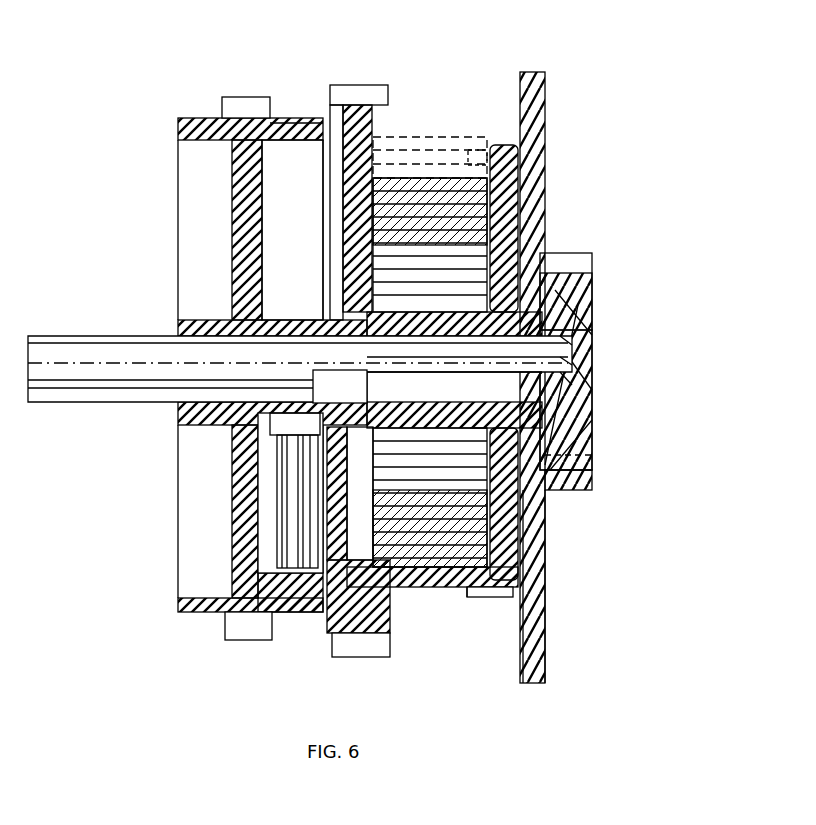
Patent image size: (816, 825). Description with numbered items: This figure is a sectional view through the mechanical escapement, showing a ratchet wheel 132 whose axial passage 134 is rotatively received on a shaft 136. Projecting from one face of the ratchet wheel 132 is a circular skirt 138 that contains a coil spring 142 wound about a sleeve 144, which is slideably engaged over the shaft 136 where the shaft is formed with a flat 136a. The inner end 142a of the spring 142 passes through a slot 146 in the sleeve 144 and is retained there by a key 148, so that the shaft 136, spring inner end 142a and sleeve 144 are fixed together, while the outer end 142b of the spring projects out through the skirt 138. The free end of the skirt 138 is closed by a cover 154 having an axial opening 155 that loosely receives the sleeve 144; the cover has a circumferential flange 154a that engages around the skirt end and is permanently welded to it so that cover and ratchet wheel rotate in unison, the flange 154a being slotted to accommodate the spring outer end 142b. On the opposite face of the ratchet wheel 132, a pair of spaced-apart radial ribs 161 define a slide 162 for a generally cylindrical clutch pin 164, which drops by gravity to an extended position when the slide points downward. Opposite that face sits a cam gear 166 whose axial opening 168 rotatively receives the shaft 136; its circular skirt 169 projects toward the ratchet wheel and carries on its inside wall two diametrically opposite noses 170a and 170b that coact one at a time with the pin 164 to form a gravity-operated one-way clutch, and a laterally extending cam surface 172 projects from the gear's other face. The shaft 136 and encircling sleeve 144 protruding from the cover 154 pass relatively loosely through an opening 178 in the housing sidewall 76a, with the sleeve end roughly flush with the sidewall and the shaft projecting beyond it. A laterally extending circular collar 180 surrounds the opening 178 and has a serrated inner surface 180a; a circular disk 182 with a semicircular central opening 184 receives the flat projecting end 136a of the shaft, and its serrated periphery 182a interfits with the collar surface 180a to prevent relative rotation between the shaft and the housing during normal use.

The housing sidewall 76a is at (527, 120).
The ratchet wheel 132 is at (352, 120).
The axial passage 134 is at (340, 392).
The shaft 136 is at (55, 350).
The flat 136a is at (548, 332).
The circular skirt 138 is at (443, 580).
The coil spring 142 is at (432, 183).
The inner end of spring 142a is at (466, 370).
The outer end of spring 142b is at (405, 150).
The sleeve 144 is at (570, 492).
The slot 146 is at (405, 372).
The key 148 is at (570, 377).
The cover 154 is at (511, 597).
The circumferential flange 154a is at (478, 597).
The axial opening 155 is at (570, 337).
The ribs 161 is at (270, 528).
The slide 162 is at (283, 422).
The clutch pin 164 is at (293, 488).
The cam gear 166 is at (245, 98).
The axial opening 168 is at (205, 338).
The circular skirt 169 is at (290, 130).
The nose 170a is at (297, 580).
The nose 170b is at (312, 155).
The cam surface 172 is at (178, 610).
The opening 178 is at (570, 320).
The circular collar 180 is at (550, 482).
The inner surface of collar 180a is at (588, 460).
The circular disk 182 is at (583, 440).
The periphery of disk 182a is at (585, 282).
The semicircular central opening 184 is at (570, 358).